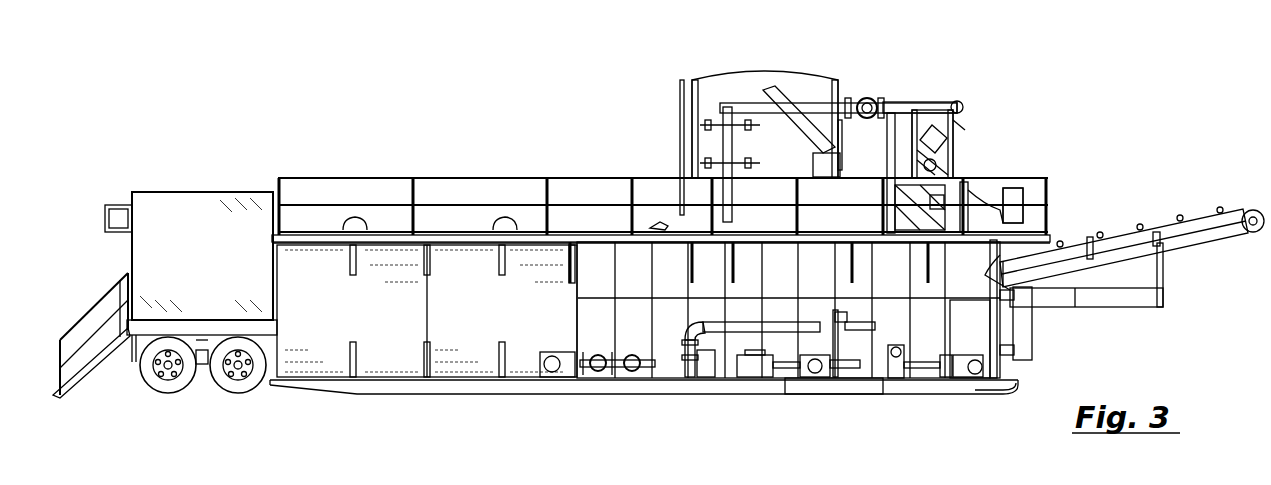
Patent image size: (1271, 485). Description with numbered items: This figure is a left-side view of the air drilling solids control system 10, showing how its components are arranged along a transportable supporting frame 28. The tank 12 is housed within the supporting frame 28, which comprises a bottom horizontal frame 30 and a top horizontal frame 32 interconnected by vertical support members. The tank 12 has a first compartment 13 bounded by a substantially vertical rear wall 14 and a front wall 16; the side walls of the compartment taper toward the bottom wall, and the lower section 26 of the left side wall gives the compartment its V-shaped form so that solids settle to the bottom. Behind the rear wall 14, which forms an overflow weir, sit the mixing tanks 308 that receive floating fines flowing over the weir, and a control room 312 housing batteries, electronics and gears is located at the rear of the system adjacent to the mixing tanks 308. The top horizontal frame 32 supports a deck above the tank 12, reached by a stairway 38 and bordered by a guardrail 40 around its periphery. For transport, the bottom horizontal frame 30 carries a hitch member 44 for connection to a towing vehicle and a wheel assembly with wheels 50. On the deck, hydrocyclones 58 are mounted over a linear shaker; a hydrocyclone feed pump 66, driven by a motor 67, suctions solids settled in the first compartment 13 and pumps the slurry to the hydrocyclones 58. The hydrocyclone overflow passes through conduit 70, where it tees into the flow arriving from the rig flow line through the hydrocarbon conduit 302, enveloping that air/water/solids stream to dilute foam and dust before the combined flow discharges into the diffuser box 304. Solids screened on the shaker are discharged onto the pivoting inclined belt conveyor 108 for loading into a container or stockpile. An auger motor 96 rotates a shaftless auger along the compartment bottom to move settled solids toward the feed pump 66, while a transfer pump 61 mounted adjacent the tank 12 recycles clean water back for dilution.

The air drilling solids control system 10 is at (340, 108).
The tank 12 is at (940, 377).
The first compartment 13 is at (780, 287).
The rear wall 14 is at (580, 308).
The front wall 16 is at (950, 287).
The lower section 26 is at (683, 377).
The supporting frame 28 is at (585, 397).
The bottom horizontal frame 30 is at (752, 388).
The top horizontal frame 32 is at (393, 243).
The stairway 38 is at (82, 377).
The guardrail 40 is at (498, 178).
The hitch member 44 is at (990, 395).
The wheels 50 is at (168, 388).
The hydrocyclones 58 is at (923, 112).
The transfer pump 61 is at (692, 377).
The hydrocyclone feed pump 66 is at (897, 378).
The motor 67 is at (823, 377).
The conduit 70 is at (928, 103).
The auger motor 96 is at (1005, 375).
The belt conveyor 108 is at (1190, 207).
The hydrocarbon conduit 302 is at (867, 98).
The diffuser box 304 is at (800, 78).
The mixing tanks 308 is at (338, 322).
The control room 312 is at (190, 192).